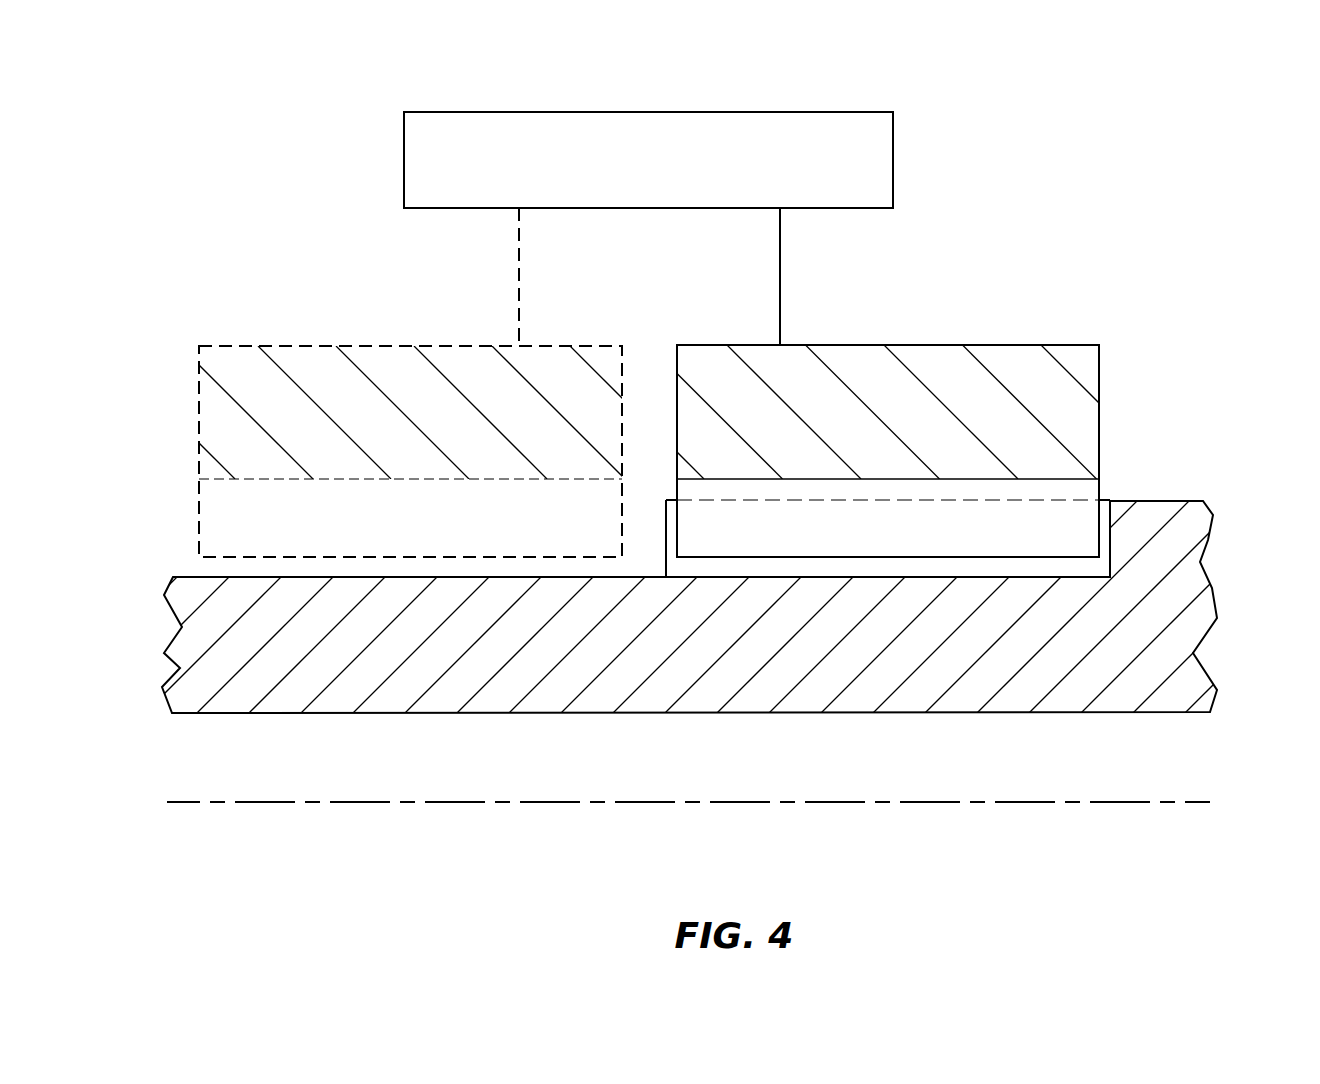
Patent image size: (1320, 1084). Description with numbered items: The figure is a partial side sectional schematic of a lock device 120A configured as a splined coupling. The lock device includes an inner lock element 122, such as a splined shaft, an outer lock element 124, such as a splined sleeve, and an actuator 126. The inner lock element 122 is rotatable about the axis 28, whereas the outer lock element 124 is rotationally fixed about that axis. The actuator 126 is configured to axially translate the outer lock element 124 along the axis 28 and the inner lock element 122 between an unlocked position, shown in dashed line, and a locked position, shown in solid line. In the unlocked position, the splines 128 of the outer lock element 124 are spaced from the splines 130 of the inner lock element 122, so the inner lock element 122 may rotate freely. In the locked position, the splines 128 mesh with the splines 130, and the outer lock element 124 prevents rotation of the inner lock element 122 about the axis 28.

The lock device 120A is at (1128, 113).
The inner lock element 122 is at (1220, 595).
The outer lock element 124 is at (186, 437).
The actuator 126 is at (906, 172).
The splines 128 is at (400, 557).
The splines 130 is at (987, 502).
The axis 28 is at (1192, 803).